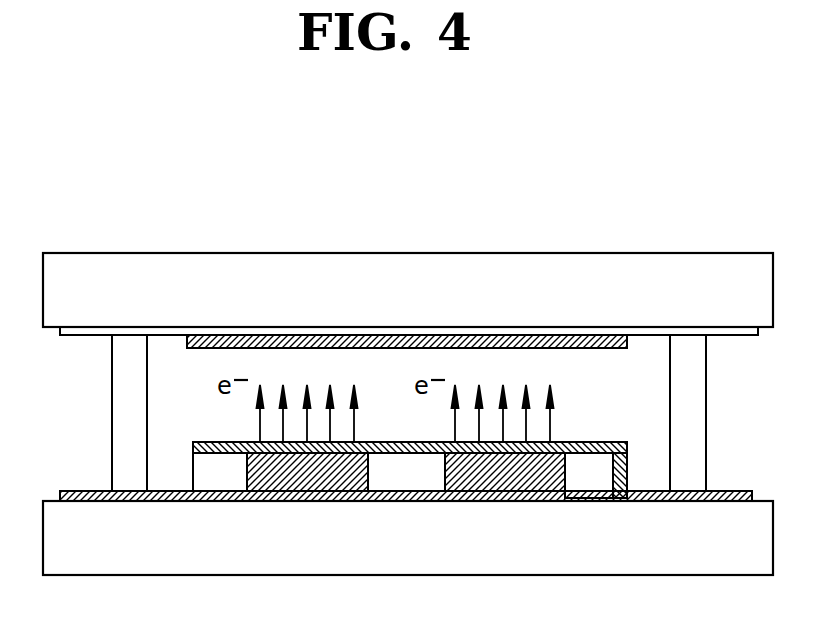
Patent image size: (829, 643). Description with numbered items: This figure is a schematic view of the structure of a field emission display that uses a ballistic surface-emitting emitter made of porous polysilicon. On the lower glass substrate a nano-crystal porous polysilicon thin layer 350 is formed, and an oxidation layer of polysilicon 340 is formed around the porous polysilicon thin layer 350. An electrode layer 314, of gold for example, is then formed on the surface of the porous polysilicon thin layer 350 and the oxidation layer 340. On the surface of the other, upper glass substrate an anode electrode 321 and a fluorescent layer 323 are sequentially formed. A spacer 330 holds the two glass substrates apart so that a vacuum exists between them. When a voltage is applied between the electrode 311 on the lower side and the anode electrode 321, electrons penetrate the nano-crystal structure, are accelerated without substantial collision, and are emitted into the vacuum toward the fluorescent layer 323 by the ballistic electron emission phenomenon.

The electrode 311 is at (170, 495).
The electrode layer 314 is at (213, 442).
The anode electrode 321 is at (330, 333).
The fluorescent layer 323 is at (452, 345).
The spacer 330 is at (693, 448).
The oxidation layer of polysilicon 340 is at (582, 477).
The porous polysilicon thin layer 350 is at (270, 473).